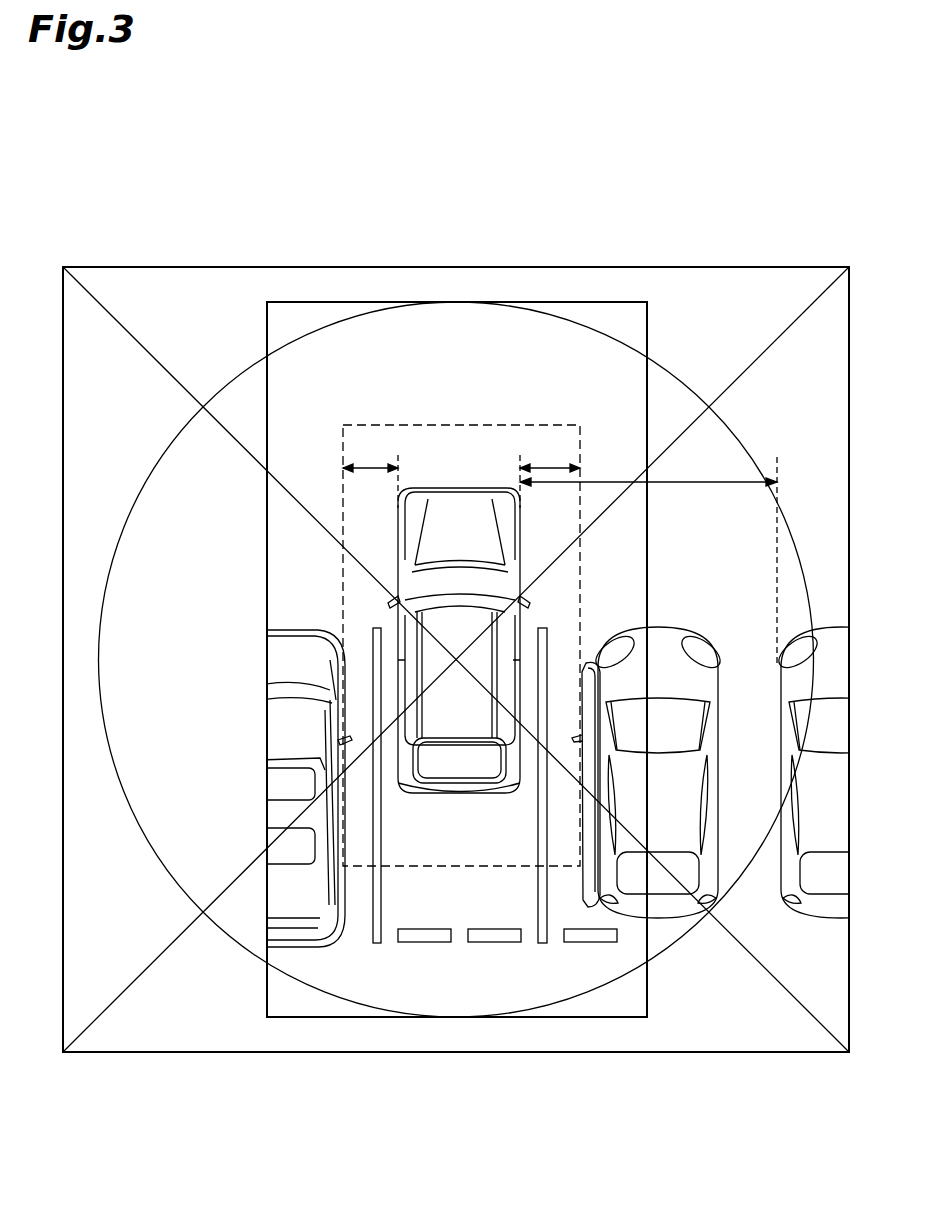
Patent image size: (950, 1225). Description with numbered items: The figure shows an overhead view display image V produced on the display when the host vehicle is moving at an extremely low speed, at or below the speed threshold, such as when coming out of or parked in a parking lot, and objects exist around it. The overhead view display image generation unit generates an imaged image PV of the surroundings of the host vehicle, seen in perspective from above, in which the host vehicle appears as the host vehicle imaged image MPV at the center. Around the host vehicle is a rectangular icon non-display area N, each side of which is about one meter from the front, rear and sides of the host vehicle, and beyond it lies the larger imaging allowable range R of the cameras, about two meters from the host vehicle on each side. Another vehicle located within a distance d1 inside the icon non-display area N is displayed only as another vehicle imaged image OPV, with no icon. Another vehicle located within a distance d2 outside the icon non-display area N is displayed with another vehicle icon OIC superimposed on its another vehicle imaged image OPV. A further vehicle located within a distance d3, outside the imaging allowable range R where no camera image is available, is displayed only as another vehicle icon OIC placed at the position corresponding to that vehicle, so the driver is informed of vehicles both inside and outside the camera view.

The overhead view display image V is at (712, 122).
The imaged image PV is at (790, 267).
The imaging allowable range R is at (647, 330).
The icon non-display area N is at (536, 425).
The host vehicle imaged image MPV is at (465, 488).
The distance d1 is at (370, 457).
The distance d2 is at (550, 457).
The distance d3 is at (648, 470).
The another vehicle imaged image OPV is at (290, 628).
The another vehicle icon OIC is at (670, 627).